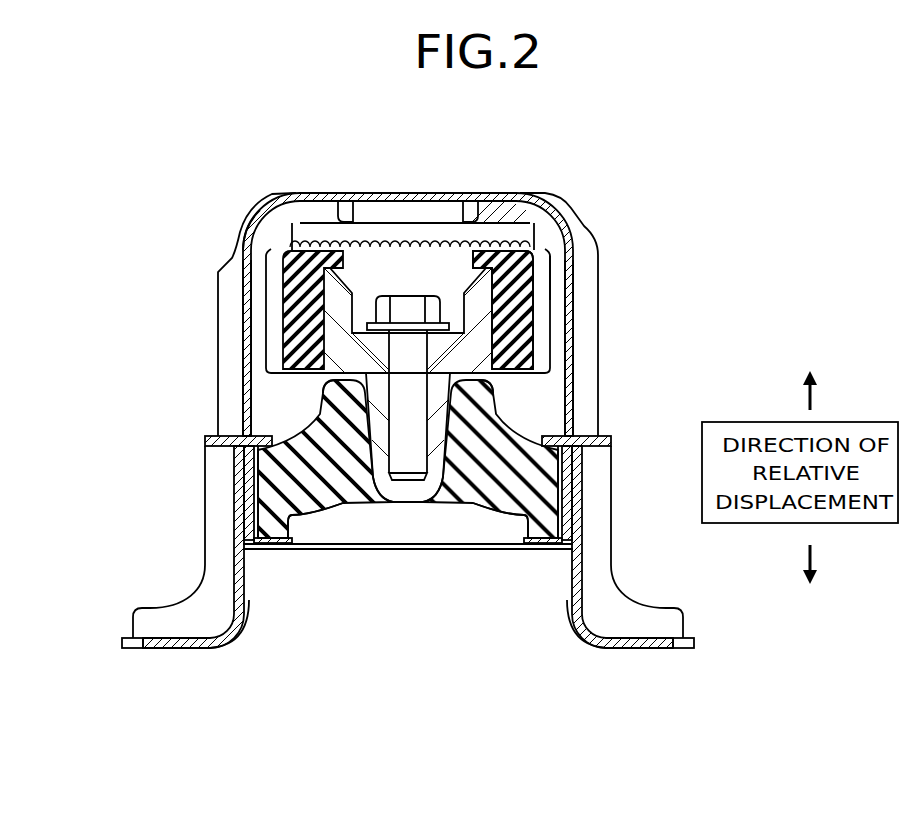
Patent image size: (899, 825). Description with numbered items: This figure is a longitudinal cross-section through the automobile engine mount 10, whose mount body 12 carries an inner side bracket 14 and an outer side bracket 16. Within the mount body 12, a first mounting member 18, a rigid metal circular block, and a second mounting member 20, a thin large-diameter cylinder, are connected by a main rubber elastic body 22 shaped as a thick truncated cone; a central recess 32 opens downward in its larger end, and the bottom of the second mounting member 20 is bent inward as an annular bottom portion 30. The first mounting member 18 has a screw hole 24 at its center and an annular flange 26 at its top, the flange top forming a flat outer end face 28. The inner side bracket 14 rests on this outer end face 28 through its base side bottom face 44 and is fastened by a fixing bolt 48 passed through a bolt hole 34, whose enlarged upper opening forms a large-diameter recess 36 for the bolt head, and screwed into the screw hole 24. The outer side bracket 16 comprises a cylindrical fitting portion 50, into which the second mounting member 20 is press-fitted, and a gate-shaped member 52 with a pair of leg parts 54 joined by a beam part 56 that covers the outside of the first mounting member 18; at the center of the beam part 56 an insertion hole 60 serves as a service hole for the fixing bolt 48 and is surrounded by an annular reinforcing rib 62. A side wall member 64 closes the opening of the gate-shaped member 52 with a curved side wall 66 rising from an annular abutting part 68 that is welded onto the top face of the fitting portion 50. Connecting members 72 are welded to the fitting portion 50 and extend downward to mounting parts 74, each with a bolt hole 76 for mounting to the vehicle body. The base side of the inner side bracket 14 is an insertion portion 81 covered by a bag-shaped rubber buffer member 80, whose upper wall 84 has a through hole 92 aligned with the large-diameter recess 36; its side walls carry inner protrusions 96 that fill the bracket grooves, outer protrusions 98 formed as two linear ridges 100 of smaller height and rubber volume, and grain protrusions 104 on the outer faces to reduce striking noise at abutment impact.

The engine mount 10 is at (673, 150).
The mount body 12 is at (321, 420).
The inner side bracket 14 is at (505, 313).
The insertion portion 81 is at (592, 310).
The outer side bracket 16 is at (189, 445).
The first mounting member 18 is at (466, 478).
The second mounting member 20 is at (572, 497).
The main rubber elastic body 22 is at (346, 502).
The screw hole 24 is at (427, 410).
The flange 26 is at (490, 383).
The outer end face 28 is at (345, 370).
The annular bottom portion 30 is at (546, 542).
The central recess 32 is at (500, 527).
The bolt hole 34 is at (389, 357).
The large-diameter recess 36 is at (354, 294).
The base side bottom face 44 is at (495, 322).
The fixing bolt 48 is at (408, 464).
The fitting portion 50 is at (253, 500).
The gate-shaped member 52 is at (243, 232).
The leg parts 54 is at (250, 378).
The beam part 56 is at (315, 298).
The insertion hole 60 is at (462, 203).
The reinforcing rib 62 is at (345, 201).
The side wall member 64 is at (586, 225).
The side wall 66 is at (554, 277).
The abutting part 68 is at (608, 440).
The connecting members 72 is at (203, 547).
The mounting part 74 is at (133, 645).
The bolt hole 76 is at (184, 642).
The rubber buffer member 80 is at (256, 276).
The upper wall 84 is at (488, 262).
The through hole 92 is at (359, 245).
The inner protrusion 96 is at (276, 278).
The outer protrusion 98 is at (552, 346).
The linear ridges 100 is at (234, 236).
The grain protrusions 104 is at (538, 283).